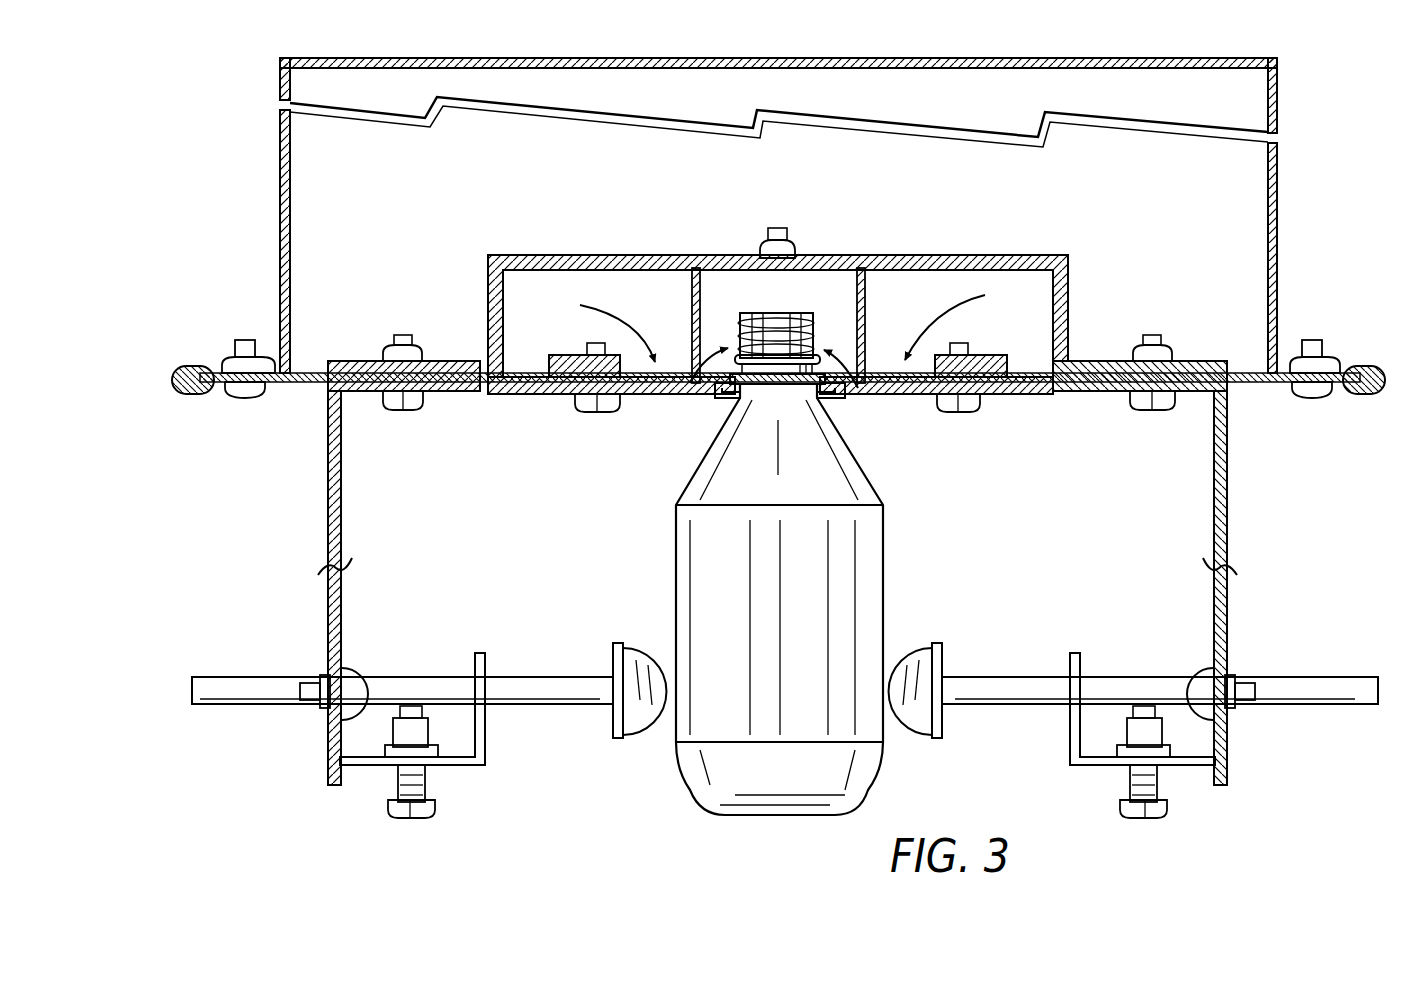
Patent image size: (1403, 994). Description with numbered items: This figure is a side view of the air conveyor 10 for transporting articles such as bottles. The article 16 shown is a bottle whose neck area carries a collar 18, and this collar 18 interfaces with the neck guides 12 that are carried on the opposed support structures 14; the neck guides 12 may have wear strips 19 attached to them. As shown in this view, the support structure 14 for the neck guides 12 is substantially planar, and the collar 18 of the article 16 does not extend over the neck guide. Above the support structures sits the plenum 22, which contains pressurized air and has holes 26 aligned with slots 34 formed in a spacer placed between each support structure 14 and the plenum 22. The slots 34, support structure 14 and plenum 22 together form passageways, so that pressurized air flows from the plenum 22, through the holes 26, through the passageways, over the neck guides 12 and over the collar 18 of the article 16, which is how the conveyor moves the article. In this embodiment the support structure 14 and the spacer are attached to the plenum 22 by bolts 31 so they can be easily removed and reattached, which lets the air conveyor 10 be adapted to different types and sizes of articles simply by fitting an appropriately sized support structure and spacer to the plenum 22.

The air conveyor 10 is at (1290, 317).
The neck guide 12 is at (722, 394).
The support structure 14 is at (642, 399).
The article 16 is at (892, 516).
The collar 18 is at (812, 350).
The wear strip 19 is at (835, 396).
The plenum 22 is at (905, 257).
The hole 26 is at (878, 380).
The bolt 31 is at (576, 400).
The slot 34 is at (660, 396).